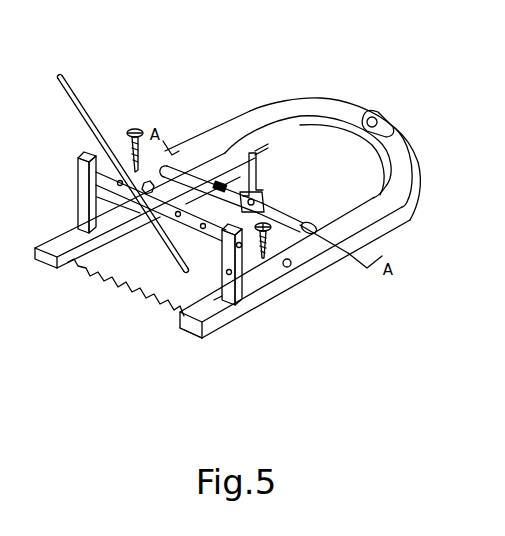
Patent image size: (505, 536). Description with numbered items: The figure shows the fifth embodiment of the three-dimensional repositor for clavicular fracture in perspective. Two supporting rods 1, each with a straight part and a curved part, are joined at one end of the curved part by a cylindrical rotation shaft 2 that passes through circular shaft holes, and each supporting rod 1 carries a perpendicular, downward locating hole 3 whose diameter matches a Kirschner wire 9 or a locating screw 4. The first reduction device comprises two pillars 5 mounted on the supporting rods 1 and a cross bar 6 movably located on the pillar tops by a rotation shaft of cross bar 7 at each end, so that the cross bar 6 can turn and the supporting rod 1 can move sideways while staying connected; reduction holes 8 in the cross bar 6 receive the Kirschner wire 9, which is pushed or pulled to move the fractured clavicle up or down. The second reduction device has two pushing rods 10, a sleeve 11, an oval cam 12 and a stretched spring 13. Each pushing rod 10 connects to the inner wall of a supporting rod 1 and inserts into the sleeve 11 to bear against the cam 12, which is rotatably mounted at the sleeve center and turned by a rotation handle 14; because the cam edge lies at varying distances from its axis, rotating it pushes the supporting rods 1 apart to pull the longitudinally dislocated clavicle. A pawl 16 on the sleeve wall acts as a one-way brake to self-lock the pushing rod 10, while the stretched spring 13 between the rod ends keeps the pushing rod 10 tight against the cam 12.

The supporting rod 1 is at (292, 103).
The rotation shaft 2 is at (372, 117).
The locating hole 3 is at (292, 265).
The locating screw 4 is at (267, 262).
The pillar 5 is at (232, 274).
The cross bar 6 is at (224, 298).
The rotation shaft of cross bar 7 is at (243, 246).
The reduction hole 8 is at (193, 330).
The Kirschner wire 9 is at (82, 104).
The pushing rod 10 is at (190, 170).
The sleeve 11 is at (314, 227).
The cam 12 is at (264, 199).
The stretched spring 13 is at (107, 287).
The rotation handle 14 is at (255, 152).
The pawl 16 is at (215, 180).